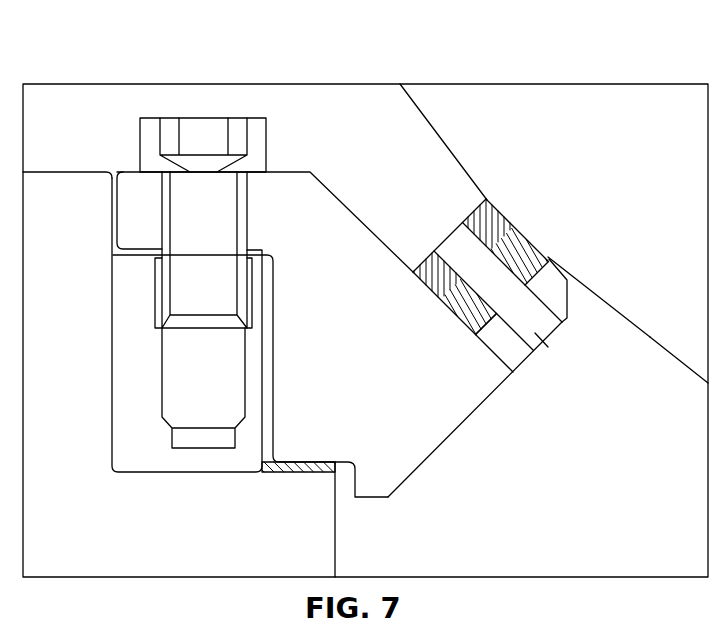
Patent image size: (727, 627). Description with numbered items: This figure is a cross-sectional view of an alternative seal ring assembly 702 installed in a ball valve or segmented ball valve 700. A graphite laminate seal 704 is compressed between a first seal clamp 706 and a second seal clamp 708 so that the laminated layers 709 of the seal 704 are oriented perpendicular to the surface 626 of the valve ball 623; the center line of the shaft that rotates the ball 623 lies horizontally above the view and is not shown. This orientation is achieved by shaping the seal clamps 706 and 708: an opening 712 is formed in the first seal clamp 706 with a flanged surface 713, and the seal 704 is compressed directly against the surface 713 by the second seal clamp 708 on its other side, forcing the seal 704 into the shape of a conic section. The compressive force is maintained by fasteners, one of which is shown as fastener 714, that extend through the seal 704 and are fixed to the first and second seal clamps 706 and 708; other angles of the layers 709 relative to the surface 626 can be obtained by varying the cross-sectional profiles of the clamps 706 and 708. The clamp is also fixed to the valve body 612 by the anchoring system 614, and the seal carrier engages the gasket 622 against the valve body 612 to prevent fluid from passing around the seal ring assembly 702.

The ball valve 700 is at (138, 73).
The anchoring system 614 is at (227, 104).
The valve body 612 is at (335, 553).
The gasket 622 is at (302, 470).
The seal ring assembly 702 is at (436, 480).
The graphite laminate seal 704 is at (519, 238).
The first seal clamp 706 is at (452, 415).
The second seal clamp 708 is at (434, 279).
The laminated layers 709 is at (547, 256).
The opening 712 is at (398, 181).
The flanged surface 713 is at (470, 330).
The fastener 714 is at (548, 347).
The valve ball 623 is at (663, 345).
The surface of the valve ball 626 is at (698, 378).